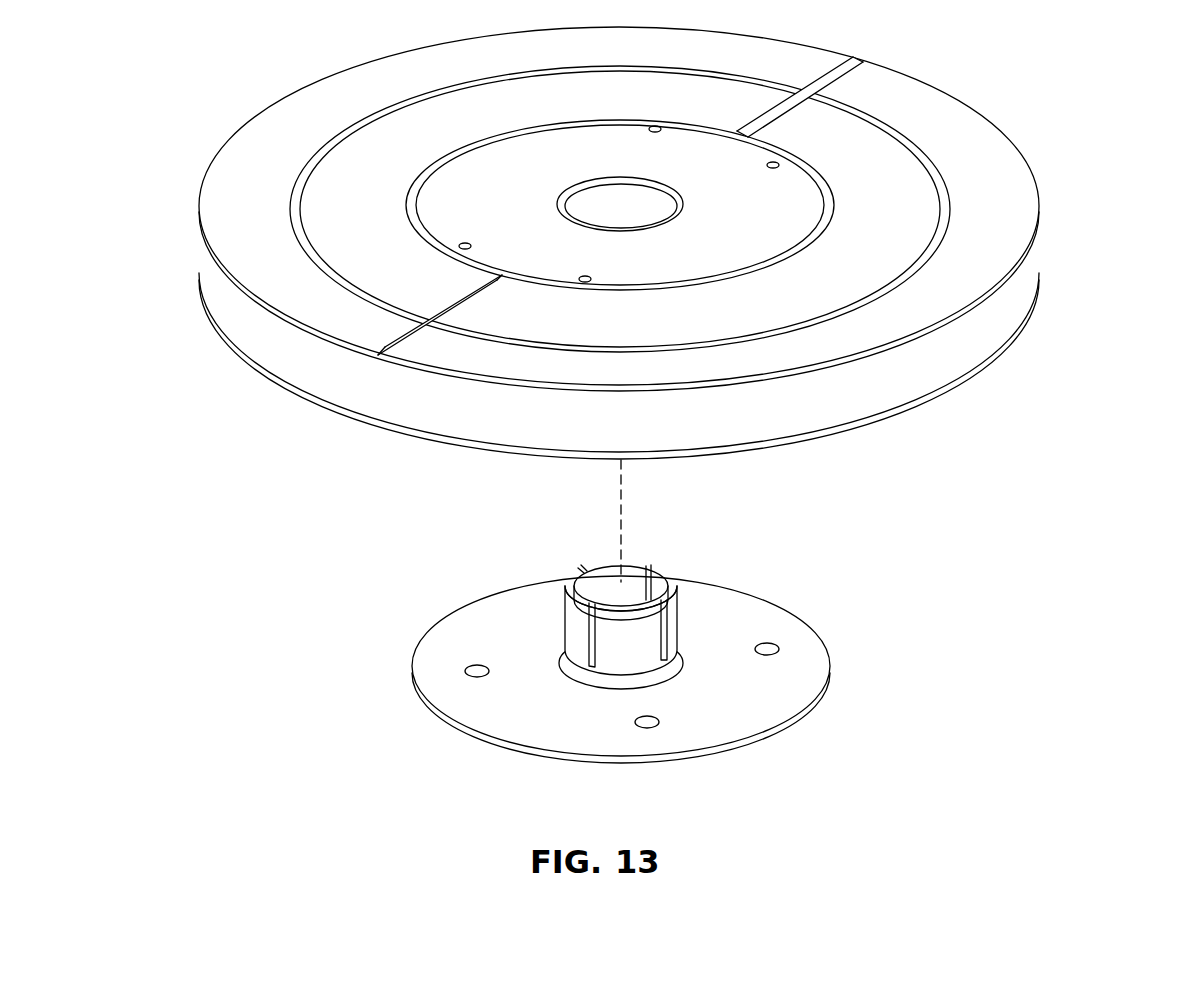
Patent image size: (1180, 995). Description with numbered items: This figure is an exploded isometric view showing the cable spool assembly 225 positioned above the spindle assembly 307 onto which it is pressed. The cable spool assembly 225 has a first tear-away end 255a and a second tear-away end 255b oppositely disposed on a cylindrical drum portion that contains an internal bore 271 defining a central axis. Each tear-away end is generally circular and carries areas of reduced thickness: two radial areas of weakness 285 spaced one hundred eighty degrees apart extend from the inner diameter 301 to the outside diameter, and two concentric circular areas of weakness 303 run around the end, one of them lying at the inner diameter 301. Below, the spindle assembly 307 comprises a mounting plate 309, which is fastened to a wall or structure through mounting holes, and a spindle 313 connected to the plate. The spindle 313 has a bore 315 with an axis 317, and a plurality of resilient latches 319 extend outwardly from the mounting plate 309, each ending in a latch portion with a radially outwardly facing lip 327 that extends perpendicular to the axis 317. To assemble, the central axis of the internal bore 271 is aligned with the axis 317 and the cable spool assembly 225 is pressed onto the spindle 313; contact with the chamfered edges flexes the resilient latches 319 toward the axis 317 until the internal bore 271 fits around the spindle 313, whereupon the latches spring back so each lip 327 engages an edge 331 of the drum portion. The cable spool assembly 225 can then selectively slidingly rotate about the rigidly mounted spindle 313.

The cable spool assembly 225 is at (680, 243).
The first tear-away end 255a is at (903, 82).
The second tear-away end 255b is at (966, 380).
The radial area of weakness 285 is at (783, 108).
The circular area of weakness 303 is at (832, 200).
The inner diameter 301 is at (432, 213).
The edge 331 is at (567, 209).
The internal bore 271 is at (655, 199).
The spindle assembly 307 is at (675, 611).
The mounting plate 309 is at (782, 704).
The spindle 313 is at (685, 614).
The bore 315 is at (604, 578).
The axis 317 is at (624, 546).
The radially outwardly facing lip 327 is at (560, 602).
The resilient latches 319 is at (562, 637).